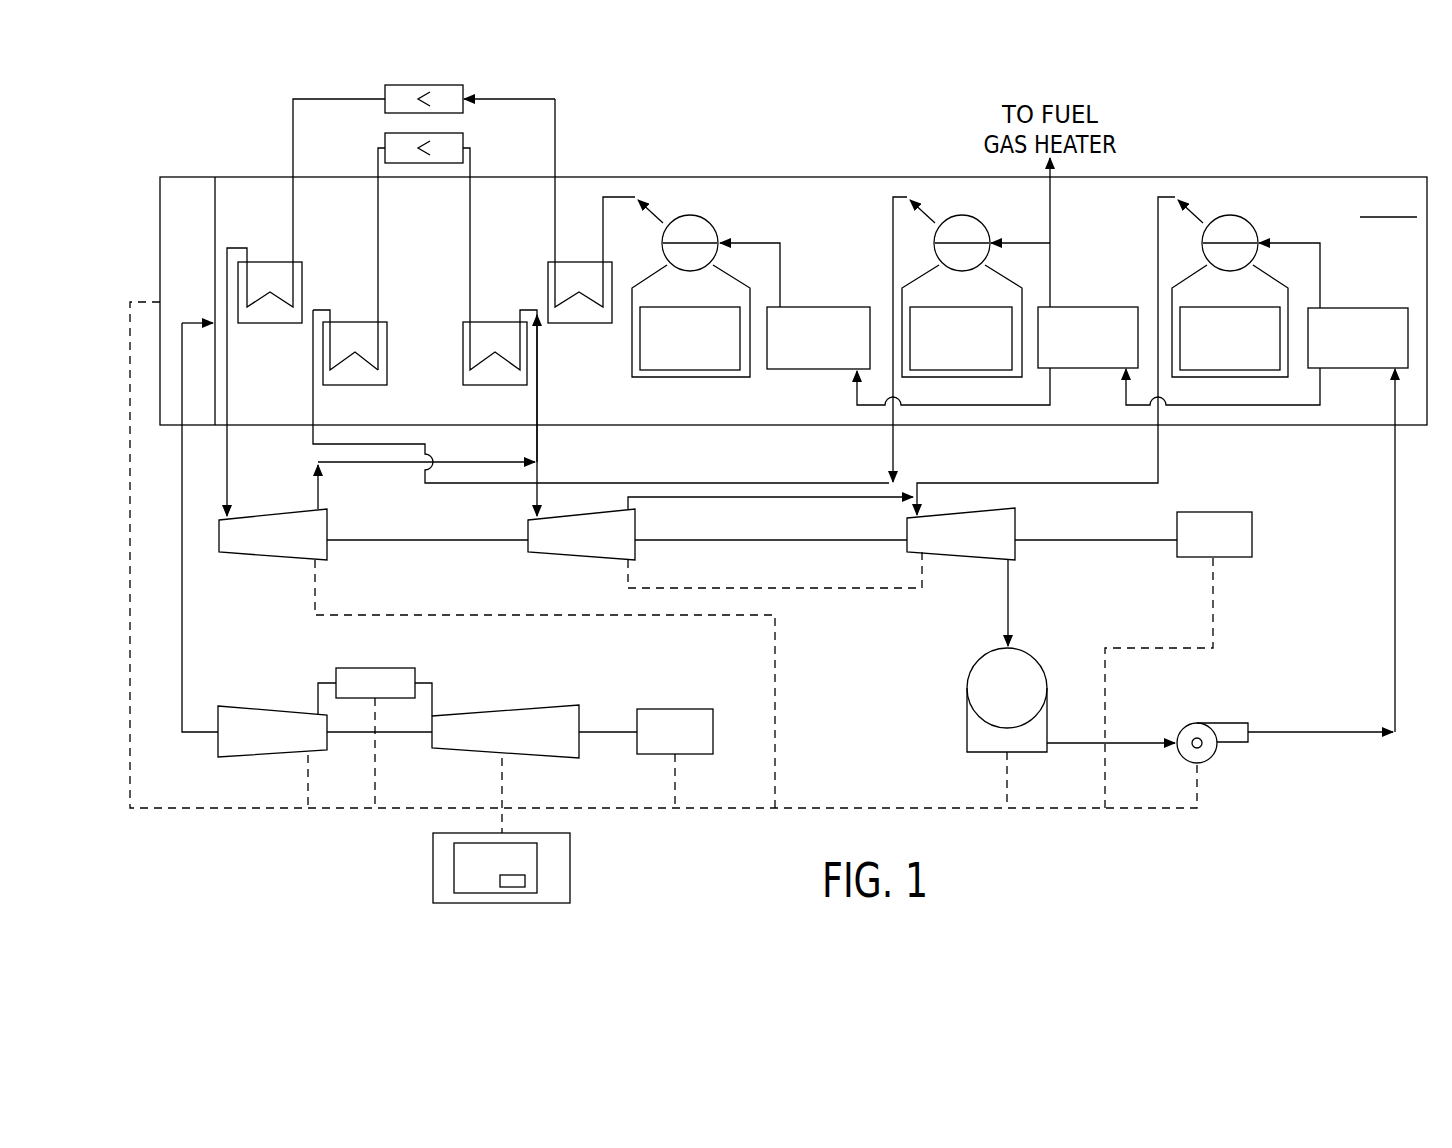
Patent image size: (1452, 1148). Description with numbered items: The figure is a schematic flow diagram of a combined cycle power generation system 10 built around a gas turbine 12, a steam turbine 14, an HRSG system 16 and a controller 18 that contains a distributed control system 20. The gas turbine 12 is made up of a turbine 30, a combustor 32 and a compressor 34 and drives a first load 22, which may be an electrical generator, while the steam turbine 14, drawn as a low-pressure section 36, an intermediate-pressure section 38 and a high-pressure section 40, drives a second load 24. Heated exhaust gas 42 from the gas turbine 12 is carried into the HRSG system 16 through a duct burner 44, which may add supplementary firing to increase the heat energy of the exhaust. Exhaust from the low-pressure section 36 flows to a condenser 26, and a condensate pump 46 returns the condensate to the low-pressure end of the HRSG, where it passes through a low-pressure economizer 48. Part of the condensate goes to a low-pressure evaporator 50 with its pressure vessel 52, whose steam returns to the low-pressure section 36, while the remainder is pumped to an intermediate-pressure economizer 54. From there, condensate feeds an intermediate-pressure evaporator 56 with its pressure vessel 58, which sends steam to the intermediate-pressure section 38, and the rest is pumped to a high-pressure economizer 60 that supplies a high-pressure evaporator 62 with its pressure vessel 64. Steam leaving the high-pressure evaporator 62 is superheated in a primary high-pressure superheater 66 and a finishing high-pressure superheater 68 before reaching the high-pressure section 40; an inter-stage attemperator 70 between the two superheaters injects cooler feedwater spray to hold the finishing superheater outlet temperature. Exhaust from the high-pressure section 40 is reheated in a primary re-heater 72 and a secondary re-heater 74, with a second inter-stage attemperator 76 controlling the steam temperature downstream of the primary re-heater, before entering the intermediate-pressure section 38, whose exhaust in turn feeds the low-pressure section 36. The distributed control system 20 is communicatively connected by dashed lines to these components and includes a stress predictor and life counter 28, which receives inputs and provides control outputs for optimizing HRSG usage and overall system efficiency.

The combined cycle power generation system 10 is at (1373, 154).
The gas turbine 12 is at (291, 771).
The steam turbine 14 is at (668, 562).
The HRSG system 16 is at (820, 176).
The controller 18 is at (433, 867).
The distributed control system 20 is at (537, 855).
The first load 22 is at (650, 709).
The second load 24 is at (1240, 557).
The condenser 26 is at (967, 718).
The stress predictor and life counter 28 is at (525, 880).
The turbine 30 is at (273, 710).
The combustor 32 is at (375, 668).
The compressor 34 is at (503, 712).
The low-pressure section 36 is at (962, 560).
The intermediate-pressure section 38 is at (585, 556).
The high-pressure section 40 is at (275, 556).
The heated exhaust gas 42 is at (182, 612).
The duct burner 44 is at (190, 190).
The condensate pump 46 is at (1207, 762).
The low-pressure economizer 48 is at (1358, 308).
The low-pressure evaporator 50 is at (1268, 285).
The pressure vessel 52 is at (1255, 220).
The intermediate-pressure economizer 54 is at (1087, 307).
The intermediate-pressure evaporator 56 is at (1000, 285).
The pressure vessel 58 is at (988, 220).
The high-pressure economizer 60 is at (818, 307).
The high-pressure evaporator 62 is at (728, 285).
The pressure vessel 64 is at (715, 220).
The primary high-pressure superheater 66 is at (580, 323).
The finishing high-pressure superheater 68 is at (268, 323).
The inter-stage attemperator 70 is at (463, 110).
The primary re-heater 72 is at (463, 353).
The secondary re-heater 74 is at (386, 356).
The inter-stage attemperator 76 is at (384, 134).